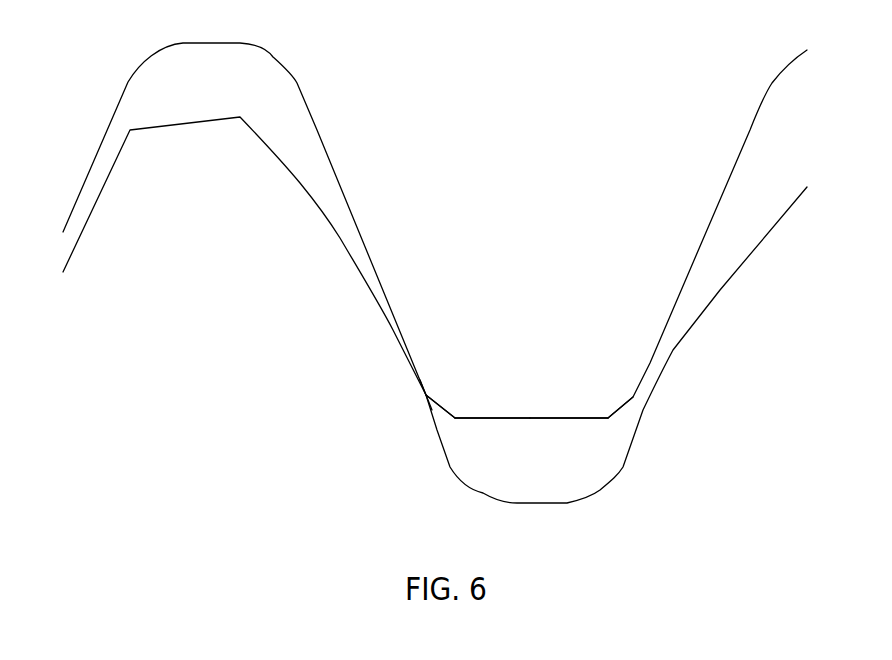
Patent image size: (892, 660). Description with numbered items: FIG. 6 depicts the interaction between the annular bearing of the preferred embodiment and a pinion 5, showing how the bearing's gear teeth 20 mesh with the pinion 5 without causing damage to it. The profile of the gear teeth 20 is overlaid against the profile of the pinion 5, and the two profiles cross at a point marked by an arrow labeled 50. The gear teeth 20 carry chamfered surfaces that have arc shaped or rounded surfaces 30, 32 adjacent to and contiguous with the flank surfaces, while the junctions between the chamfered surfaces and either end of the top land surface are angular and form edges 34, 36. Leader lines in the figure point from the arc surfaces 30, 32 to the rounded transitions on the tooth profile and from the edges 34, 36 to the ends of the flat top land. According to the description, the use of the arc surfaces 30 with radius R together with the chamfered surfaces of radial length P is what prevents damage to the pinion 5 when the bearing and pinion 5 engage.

The pinion 5 is at (290, 175).
The gear teeth 20 is at (317, 130).
The arc shaped surface 30 is at (427, 395).
The arc shaped surface 32 is at (633, 397).
The edge 34 is at (455, 420).
The edge 36 is at (608, 418).
The intersection point 50 is at (423, 397).